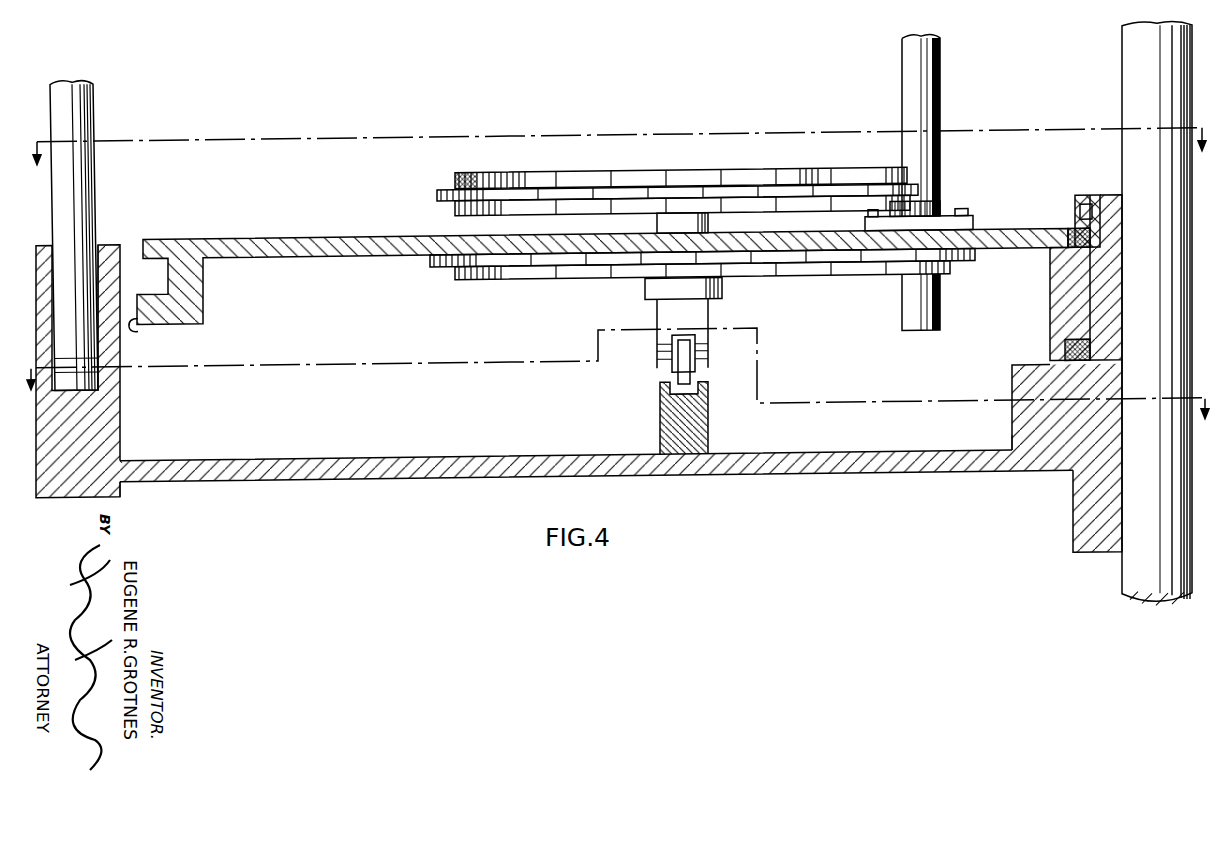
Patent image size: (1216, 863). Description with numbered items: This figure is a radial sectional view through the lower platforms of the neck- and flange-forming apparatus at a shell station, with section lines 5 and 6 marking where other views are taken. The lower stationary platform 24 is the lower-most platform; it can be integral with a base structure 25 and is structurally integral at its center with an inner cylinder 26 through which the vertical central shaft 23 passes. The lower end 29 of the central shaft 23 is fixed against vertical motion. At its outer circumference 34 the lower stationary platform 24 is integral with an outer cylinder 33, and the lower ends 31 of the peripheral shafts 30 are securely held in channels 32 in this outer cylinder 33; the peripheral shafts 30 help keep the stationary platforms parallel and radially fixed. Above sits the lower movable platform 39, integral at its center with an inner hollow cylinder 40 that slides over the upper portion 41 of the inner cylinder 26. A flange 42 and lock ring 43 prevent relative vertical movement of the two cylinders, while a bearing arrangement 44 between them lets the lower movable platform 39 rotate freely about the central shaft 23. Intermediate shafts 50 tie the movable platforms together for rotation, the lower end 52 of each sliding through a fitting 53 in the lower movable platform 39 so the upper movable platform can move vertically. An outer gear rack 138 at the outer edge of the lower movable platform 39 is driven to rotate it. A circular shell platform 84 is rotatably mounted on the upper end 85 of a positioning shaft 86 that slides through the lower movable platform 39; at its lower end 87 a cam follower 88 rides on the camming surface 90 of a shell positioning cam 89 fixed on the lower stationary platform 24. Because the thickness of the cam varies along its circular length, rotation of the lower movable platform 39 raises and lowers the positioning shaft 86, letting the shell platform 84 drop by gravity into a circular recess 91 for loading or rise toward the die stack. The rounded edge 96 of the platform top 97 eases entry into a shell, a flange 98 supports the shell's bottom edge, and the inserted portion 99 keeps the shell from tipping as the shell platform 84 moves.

The section line 5- 5 is at (617, 378).
The section line 6- 6 is at (617, 132).
The central shaft 23 is at (1062, 332).
The lower stationary platform 24 is at (320, 477).
The base structure 25 is at (108, 493).
The inner cylinder 26 is at (1011, 430).
The lower end 29 is at (1122, 588).
The peripheral shaft 30 is at (77, 115).
The lower end 31 is at (88, 357).
The channel 32 is at (100, 285).
The outer cylinder 33 is at (121, 431).
The outer circumference 34 is at (122, 457).
The lower movable platform 39 is at (221, 235).
The inner hollow cylinder 40 is at (1051, 300).
The upper portion 41 is at (1083, 220).
The flange 42 is at (1013, 372).
The lock ring 43 is at (1076, 202).
The bearing arrangement 44 is at (1070, 248).
The intermediate shaft 50 is at (903, 100).
The lower end 52 is at (905, 322).
The fitting 53 is at (941, 204).
The shell platform 84 is at (630, 176).
The upper end 85 is at (709, 227).
The positioning shaft 86 is at (709, 320).
The lower end 87 is at (664, 366).
The cam follower 88 is at (672, 384).
The shell positioning cam 89 is at (710, 436).
The camming surface 90 is at (666, 400).
The circular recess 91 is at (485, 280).
The edge 96 is at (453, 176).
The platform top 97 is at (529, 172).
The flange 98 is at (437, 194).
The portion 99 is at (818, 174).
The outer gear rack 138 is at (136, 325).